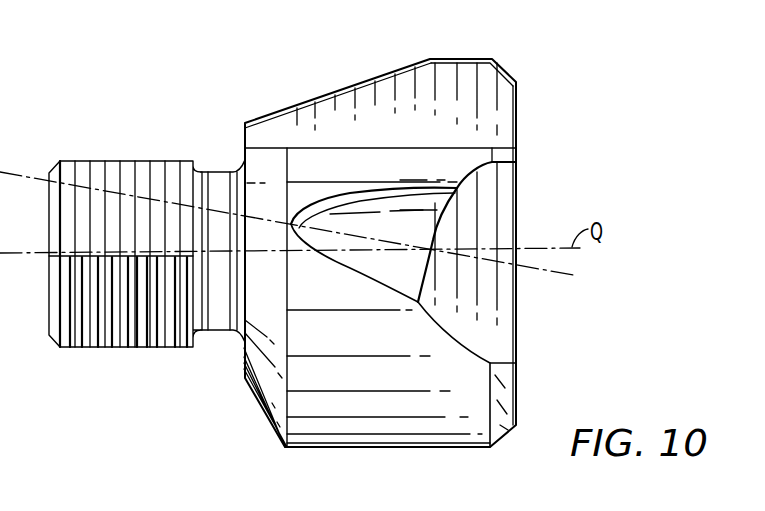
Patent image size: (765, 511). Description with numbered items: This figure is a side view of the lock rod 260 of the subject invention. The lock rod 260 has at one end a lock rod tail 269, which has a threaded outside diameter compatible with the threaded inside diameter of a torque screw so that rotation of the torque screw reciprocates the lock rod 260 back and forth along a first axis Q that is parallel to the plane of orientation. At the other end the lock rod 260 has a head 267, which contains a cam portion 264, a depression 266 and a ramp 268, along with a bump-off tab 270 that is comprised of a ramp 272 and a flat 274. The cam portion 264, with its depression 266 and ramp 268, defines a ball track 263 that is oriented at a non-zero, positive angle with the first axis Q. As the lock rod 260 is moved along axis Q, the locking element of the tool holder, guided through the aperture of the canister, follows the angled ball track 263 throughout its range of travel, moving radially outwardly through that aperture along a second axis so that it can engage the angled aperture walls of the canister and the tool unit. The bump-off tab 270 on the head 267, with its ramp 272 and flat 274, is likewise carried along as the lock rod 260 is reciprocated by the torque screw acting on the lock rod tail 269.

The lock rod 260 is at (243, 163).
The ball track 263 is at (560, 274).
The cam portion 264 is at (385, 267).
The depression 266 is at (513, 343).
The head 267 is at (377, 438).
The ramp 268 is at (367, 208).
The lock rod tail 269 is at (97, 161).
The bump-off tab 270 is at (503, 108).
The ramp 272 is at (340, 90).
The flat 274 is at (447, 55).